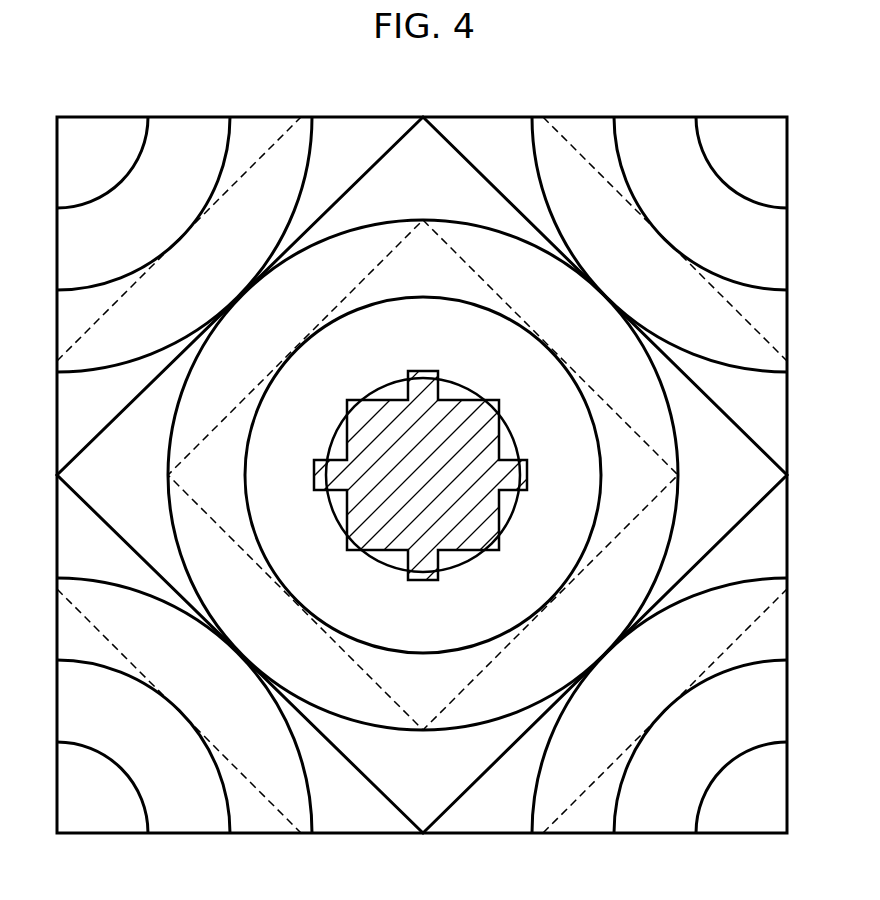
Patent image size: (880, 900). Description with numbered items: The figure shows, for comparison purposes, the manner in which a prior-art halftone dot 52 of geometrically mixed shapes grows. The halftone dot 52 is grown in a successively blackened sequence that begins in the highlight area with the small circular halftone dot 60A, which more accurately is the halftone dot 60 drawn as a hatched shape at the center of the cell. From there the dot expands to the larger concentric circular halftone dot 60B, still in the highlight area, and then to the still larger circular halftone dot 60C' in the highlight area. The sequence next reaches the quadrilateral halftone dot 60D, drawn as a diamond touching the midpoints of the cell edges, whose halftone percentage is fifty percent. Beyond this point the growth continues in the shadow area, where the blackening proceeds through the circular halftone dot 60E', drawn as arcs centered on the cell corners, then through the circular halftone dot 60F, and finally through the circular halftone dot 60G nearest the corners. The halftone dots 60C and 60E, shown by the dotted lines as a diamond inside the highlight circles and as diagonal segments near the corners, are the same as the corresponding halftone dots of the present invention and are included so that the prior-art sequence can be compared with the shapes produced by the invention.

The halftone dot of geometrically mixed shapes 52 is at (582, 117).
The halftone dot 60 is at (471, 410).
The circular halftone dot 60A is at (377, 563).
The circular halftone dot 60B is at (356, 308).
The halftone dot 60C is at (423, 475).
The circular halftone dot 60C' is at (423, 475).
The quadrilateral halftone dot 60D is at (78, 490).
The halftone dot 60E is at (422, 475).
The circular halftone dot 60E' is at (440, 450).
The circular halftone dot 60F is at (217, 770).
The circular halftone dot 60G is at (118, 767).